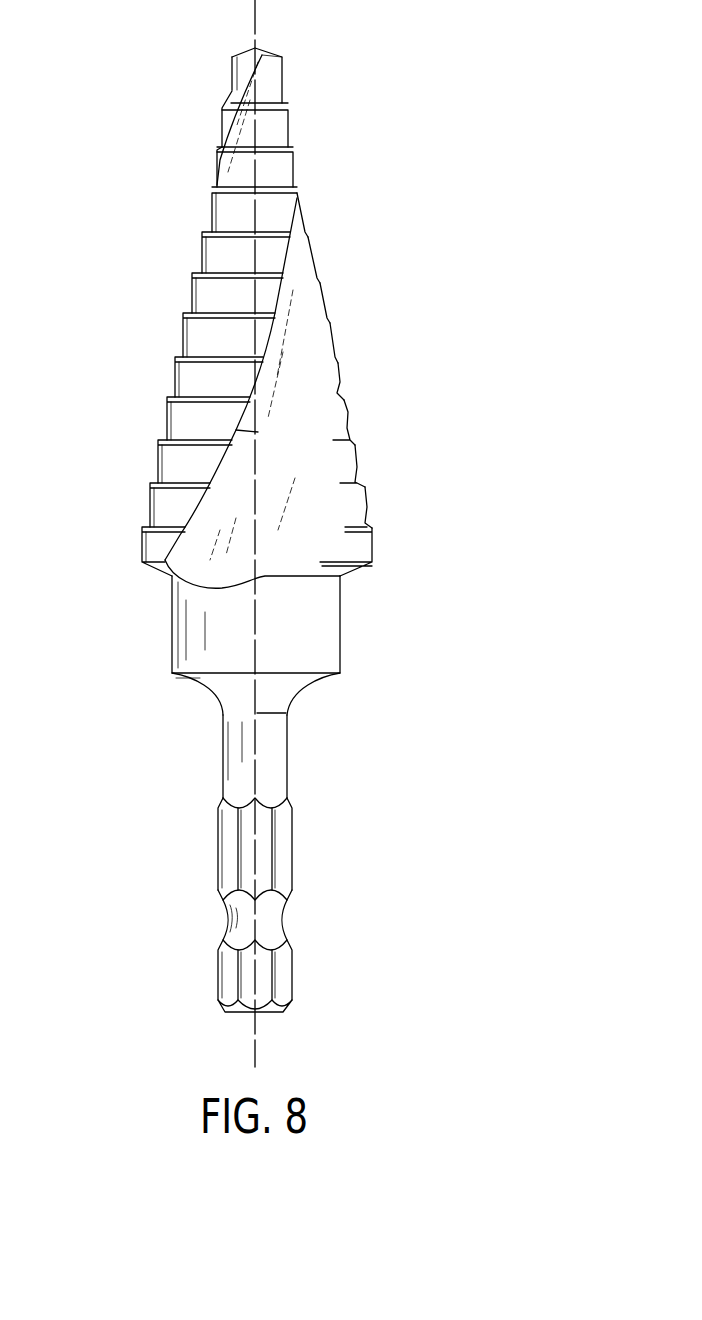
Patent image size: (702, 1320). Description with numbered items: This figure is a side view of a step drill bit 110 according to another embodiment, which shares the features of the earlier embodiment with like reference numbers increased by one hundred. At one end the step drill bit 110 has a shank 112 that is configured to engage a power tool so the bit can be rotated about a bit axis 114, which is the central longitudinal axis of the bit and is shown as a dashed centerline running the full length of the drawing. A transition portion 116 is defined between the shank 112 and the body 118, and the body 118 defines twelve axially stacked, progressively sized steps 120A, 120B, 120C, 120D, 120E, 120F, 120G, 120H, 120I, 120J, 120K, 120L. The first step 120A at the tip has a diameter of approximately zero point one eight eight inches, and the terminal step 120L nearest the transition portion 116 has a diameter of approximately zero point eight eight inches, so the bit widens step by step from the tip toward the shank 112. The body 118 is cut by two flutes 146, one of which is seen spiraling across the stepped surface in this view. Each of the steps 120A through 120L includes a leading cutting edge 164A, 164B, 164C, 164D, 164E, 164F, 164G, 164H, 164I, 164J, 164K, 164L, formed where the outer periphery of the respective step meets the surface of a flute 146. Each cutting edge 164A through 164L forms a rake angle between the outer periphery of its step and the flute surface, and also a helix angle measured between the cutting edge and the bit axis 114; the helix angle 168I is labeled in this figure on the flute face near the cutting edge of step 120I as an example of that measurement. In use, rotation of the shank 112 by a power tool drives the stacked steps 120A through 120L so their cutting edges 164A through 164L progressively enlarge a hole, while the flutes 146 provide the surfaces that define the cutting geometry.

The step drill bit 110 is at (490, 80).
The shank 112 is at (292, 868).
The bit axis 114 is at (257, 1042).
The transition portion 116 is at (330, 618).
The body 118 is at (490, 256).
The first step 120A is at (282, 72).
The step 120B is at (288, 114).
The step 120C is at (293, 160).
The step 120D is at (212, 211).
The step 120E is at (202, 250).
The step 120F is at (192, 293).
The step 120G is at (183, 335).
The step 120H is at (175, 376).
The step 120I is at (167, 417).
The step 120J is at (158, 458).
The step 120K is at (150, 500).
The terminal step 120L is at (142, 541).
The flute 146 is at (238, 99).
The leading cutting edge 164A is at (232, 72).
The leading cutting edge 164B is at (223, 110).
The leading cutting edge 164C is at (218, 158).
The leading cutting edge 164D is at (298, 213).
The leading cutting edge 164E is at (308, 251).
The leading cutting edge 164F is at (318, 294).
The leading cutting edge 164G is at (328, 336).
The leading cutting edge 164H is at (338, 377).
The leading cutting edge 164I is at (348, 418).
The leading cutting edge 164J is at (355, 459).
The leading cutting edge 164K is at (364, 500).
The leading cutting edge 164L is at (372, 541).
The helix angle 168I is at (256, 434).